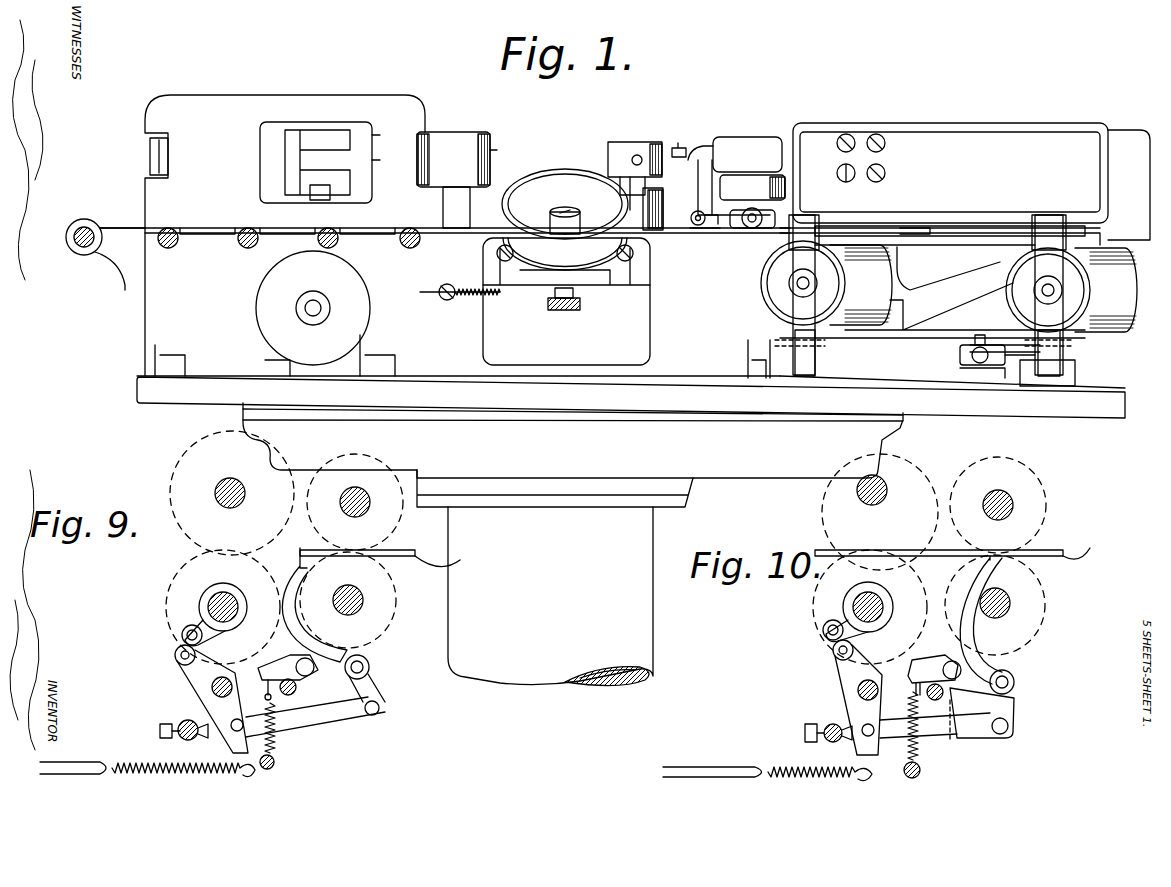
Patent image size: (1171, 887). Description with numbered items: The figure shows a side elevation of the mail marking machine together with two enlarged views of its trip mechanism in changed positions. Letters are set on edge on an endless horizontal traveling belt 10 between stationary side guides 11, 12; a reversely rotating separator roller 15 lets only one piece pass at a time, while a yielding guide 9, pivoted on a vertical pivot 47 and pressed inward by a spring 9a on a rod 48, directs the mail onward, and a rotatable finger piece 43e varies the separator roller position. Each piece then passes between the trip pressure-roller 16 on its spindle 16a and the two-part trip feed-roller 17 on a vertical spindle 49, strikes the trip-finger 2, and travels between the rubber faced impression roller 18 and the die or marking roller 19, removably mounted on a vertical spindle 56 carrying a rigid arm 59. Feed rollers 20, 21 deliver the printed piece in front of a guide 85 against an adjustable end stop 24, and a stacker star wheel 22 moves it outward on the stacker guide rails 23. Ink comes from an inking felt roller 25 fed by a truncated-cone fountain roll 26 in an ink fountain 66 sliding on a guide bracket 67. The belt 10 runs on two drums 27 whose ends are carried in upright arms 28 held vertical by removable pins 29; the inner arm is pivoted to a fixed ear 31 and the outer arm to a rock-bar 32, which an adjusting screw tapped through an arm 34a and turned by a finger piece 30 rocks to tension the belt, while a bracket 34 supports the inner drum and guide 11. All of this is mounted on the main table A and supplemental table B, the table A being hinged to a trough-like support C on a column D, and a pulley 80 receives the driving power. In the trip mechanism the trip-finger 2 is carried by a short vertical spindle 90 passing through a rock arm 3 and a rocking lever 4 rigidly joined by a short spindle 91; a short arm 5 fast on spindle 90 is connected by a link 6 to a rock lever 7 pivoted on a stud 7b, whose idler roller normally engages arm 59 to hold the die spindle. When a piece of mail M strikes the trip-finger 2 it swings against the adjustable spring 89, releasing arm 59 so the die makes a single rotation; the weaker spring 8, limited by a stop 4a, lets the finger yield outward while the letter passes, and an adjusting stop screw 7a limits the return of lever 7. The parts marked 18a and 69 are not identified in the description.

In FIG. 1, the trip-finger 2 is at (652, 188).
In FIG. 9, the trip-finger 2 is at (305, 573).
In FIG. 10, the trip-finger 2 is at (1000, 574).
In FIG. 1, the rock arm 3 is at (640, 235).
In FIG. 9, the rock arm 3 is at (298, 686).
In FIG. 10, the rock arm 3 is at (951, 712).
In FIG. 9, the rocking lever 4 is at (275, 668).
In FIG. 10, the rocking lever 4 is at (945, 660).
In FIG. 9, the stop 4a is at (282, 748).
In FIG. 10, the stop 4a is at (912, 690).
In FIG. 9, the short arm 5 is at (380, 690).
In FIG. 10, the short arm 5 is at (1018, 712).
In FIG. 9, the link 6 is at (372, 716).
In FIG. 10, the link 6 is at (985, 736).
In FIG. 9, the rock lever 7 is at (175, 690).
In FIG. 10, the rock lever 7 is at (855, 712).
In FIG. 9, the adjusting stop screw 7a is at (189, 739).
In FIG. 10, the adjusting stop screw 7a is at (818, 742).
In FIG. 9, the stud 7b is at (210, 687).
In FIG. 10, the stud 7b is at (858, 688).
In FIG. 9, the spring 8 is at (278, 744).
In FIG. 10, the spring 8 is at (920, 768).
In FIG. 1, the yielding guide 9 is at (740, 176).
In FIG. 1, the spring 9a is at (745, 228).
In FIG. 1, the endless horizontal traveling belt 10 is at (930, 252).
In FIG. 1, the stationary side guide 11 is at (1132, 142).
In FIG. 1, the stationary side guide 12 is at (950, 173).
In FIG. 1, the reversely rotating separator roller 15 is at (752, 188).
In FIG. 1, the trip pressure-roller 16 is at (382, 524).
In FIG. 10, the trip pressure-roller 16 is at (1045, 522).
In FIG. 1, the spindle 16a is at (348, 514).
In FIG. 10, the spindle 16a is at (1015, 500).
In FIG. 1, the trip feed-roller 17 is at (630, 148).
In FIG. 9, the trip feed-roller 17 is at (378, 620).
In FIG. 10, the trip feed-roller 17 is at (1030, 632).
In FIG. 1, the impression roller 18 is at (200, 462).
In FIG. 10, the impression roller 18 is at (860, 478).
In FIG. 1, the shaft 18a is at (215, 490).
In FIG. 10, the shaft 18a is at (880, 483).
In FIG. 9, the die or marking roller 19 is at (182, 616).
In FIG. 10, the die or marking roller 19 is at (825, 587).
In FIG. 1, the feed roller 20 is at (493, 170).
In FIG. 1, the feed roller 21 is at (453, 180).
In FIG. 1, the stacker star wheel 22 is at (315, 150).
In FIG. 1, the stacker guide rails 23 is at (245, 242).
In FIG. 1, the adjustable end stop 24 is at (150, 150).
In FIG. 1, the inking felt roller 25 is at (565, 169).
In FIG. 1, the fountain roll 26 is at (565, 204).
In FIG. 1, the drums 27 is at (1010, 285).
In FIG. 1, the upright arm 28 is at (925, 286).
In FIG. 1, the removable pin 29 is at (828, 344).
In FIG. 1, the finger piece 30 is at (962, 362).
In FIG. 1, the fixed ear 31 is at (790, 350).
In FIG. 1, the rock-bar 32 is at (1036, 386).
In FIG. 1, the bracket 34 is at (925, 240).
In FIG. 1, the arm 34a is at (1030, 346).
In FIG. 1, the rotatable finger piece 43e is at (752, 232).
In FIG. 1, the vertical pivot 47 is at (680, 147).
In FIG. 1, the rod 48 is at (697, 226).
In FIG. 9, the vertical spindle 49 is at (365, 601).
In FIG. 10, the vertical spindle 49 is at (1012, 603).
In FIG. 9, the vertical spindle 56 is at (230, 598).
In FIG. 10, the vertical spindle 56 is at (873, 596).
In FIG. 9, the rigid arm 59 is at (200, 612).
In FIG. 10, the rigid arm 59 is at (840, 612).
In FIG. 1, the ink fountain 66 is at (565, 254).
In FIG. 1, the guide bracket 67 is at (575, 305).
In FIG. 1, the screw spring 69 is at (502, 298).
In FIG. 1, the pulley 80 is at (268, 305).
In FIG. 1, the guide 85 is at (391, 134).
In FIG. 9, the adjustable spring 89 is at (147, 783).
In FIG. 10, the adjustable spring 89 is at (767, 787).
In FIG. 9, the short vertical spindle 90 is at (370, 667).
In FIG. 10, the short vertical spindle 90 is at (1016, 684).
In FIG. 9, the short spindle 91 is at (297, 700).
In FIG. 10, the short spindle 91 is at (952, 700).
In FIG. 1, the main horizontal table A is at (990, 408).
In FIG. 1, the supplemental table B is at (721, 298).
In FIG. 1, the trough-like support C is at (573, 455).
In FIG. 1, the column D is at (550, 596).
In FIG. 9, the piece of mail M is at (449, 555).
In FIG. 10, the piece of mail M is at (1089, 548).